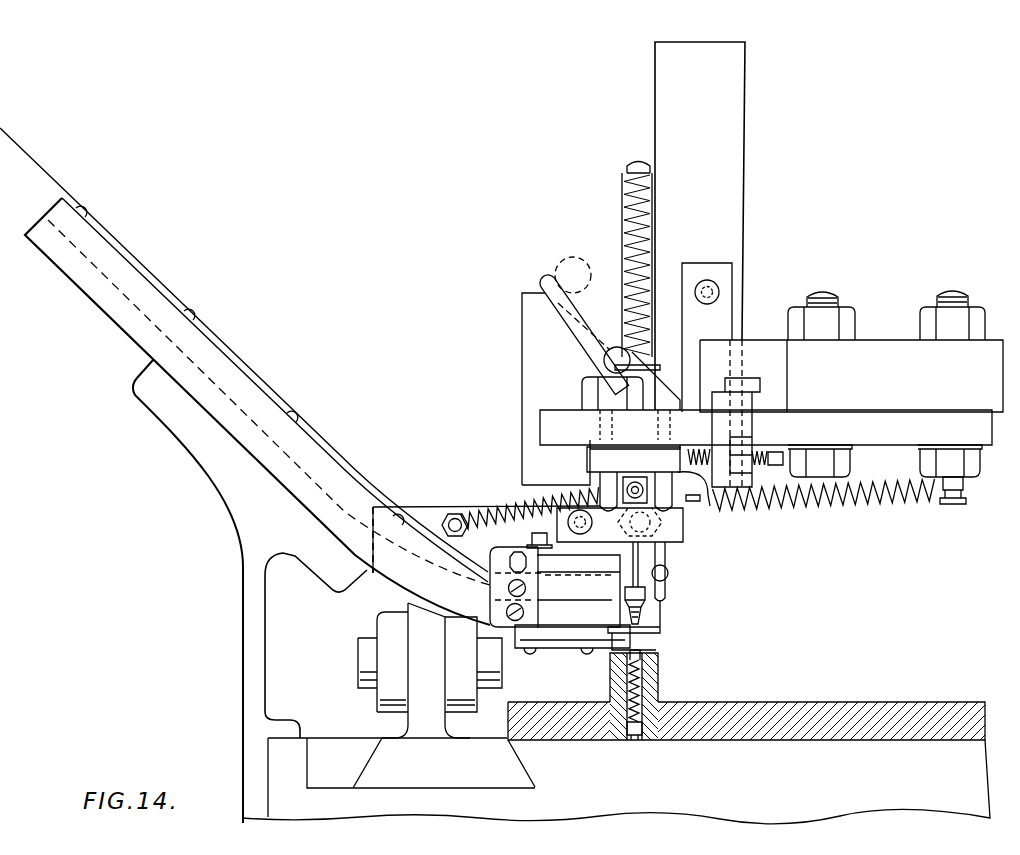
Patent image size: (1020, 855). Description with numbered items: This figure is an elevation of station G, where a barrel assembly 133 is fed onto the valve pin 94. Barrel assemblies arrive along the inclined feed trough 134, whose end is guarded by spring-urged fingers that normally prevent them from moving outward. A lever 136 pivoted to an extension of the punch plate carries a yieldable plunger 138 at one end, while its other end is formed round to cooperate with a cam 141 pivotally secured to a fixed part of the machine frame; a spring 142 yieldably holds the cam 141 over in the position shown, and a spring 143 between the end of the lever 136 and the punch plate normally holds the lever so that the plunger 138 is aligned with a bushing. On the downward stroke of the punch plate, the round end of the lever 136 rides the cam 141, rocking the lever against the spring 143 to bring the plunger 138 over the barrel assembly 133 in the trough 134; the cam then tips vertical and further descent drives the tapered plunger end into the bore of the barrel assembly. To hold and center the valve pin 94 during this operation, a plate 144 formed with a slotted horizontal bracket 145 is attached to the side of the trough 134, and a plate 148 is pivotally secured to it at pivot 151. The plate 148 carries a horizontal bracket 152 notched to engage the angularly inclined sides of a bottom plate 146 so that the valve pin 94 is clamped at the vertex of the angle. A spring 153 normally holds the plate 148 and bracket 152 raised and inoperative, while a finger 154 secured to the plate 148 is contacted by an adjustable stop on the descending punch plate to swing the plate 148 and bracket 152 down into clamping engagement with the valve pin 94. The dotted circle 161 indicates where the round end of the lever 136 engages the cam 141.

The inclined feed trough 134 is at (223, 350).
The knob 161 is at (557, 260).
The cam 141 is at (543, 290).
The spring 142 is at (572, 338).
The lever 136 is at (582, 458).
The plate 144 is at (412, 503).
The spring 153 is at (487, 512).
The pivot 151 is at (592, 525).
The finger 154 is at (683, 517).
The slotted horizontal bracket 145 is at (686, 540).
The yieldable plunger 138 is at (640, 568).
The plate 148 is at (668, 580).
The barrel assembly 133 is at (650, 595).
The horizontal bracket 152 is at (638, 636).
The valve pin 94 is at (640, 645).
The plate 146 is at (566, 642).
The spring 143 is at (884, 503).